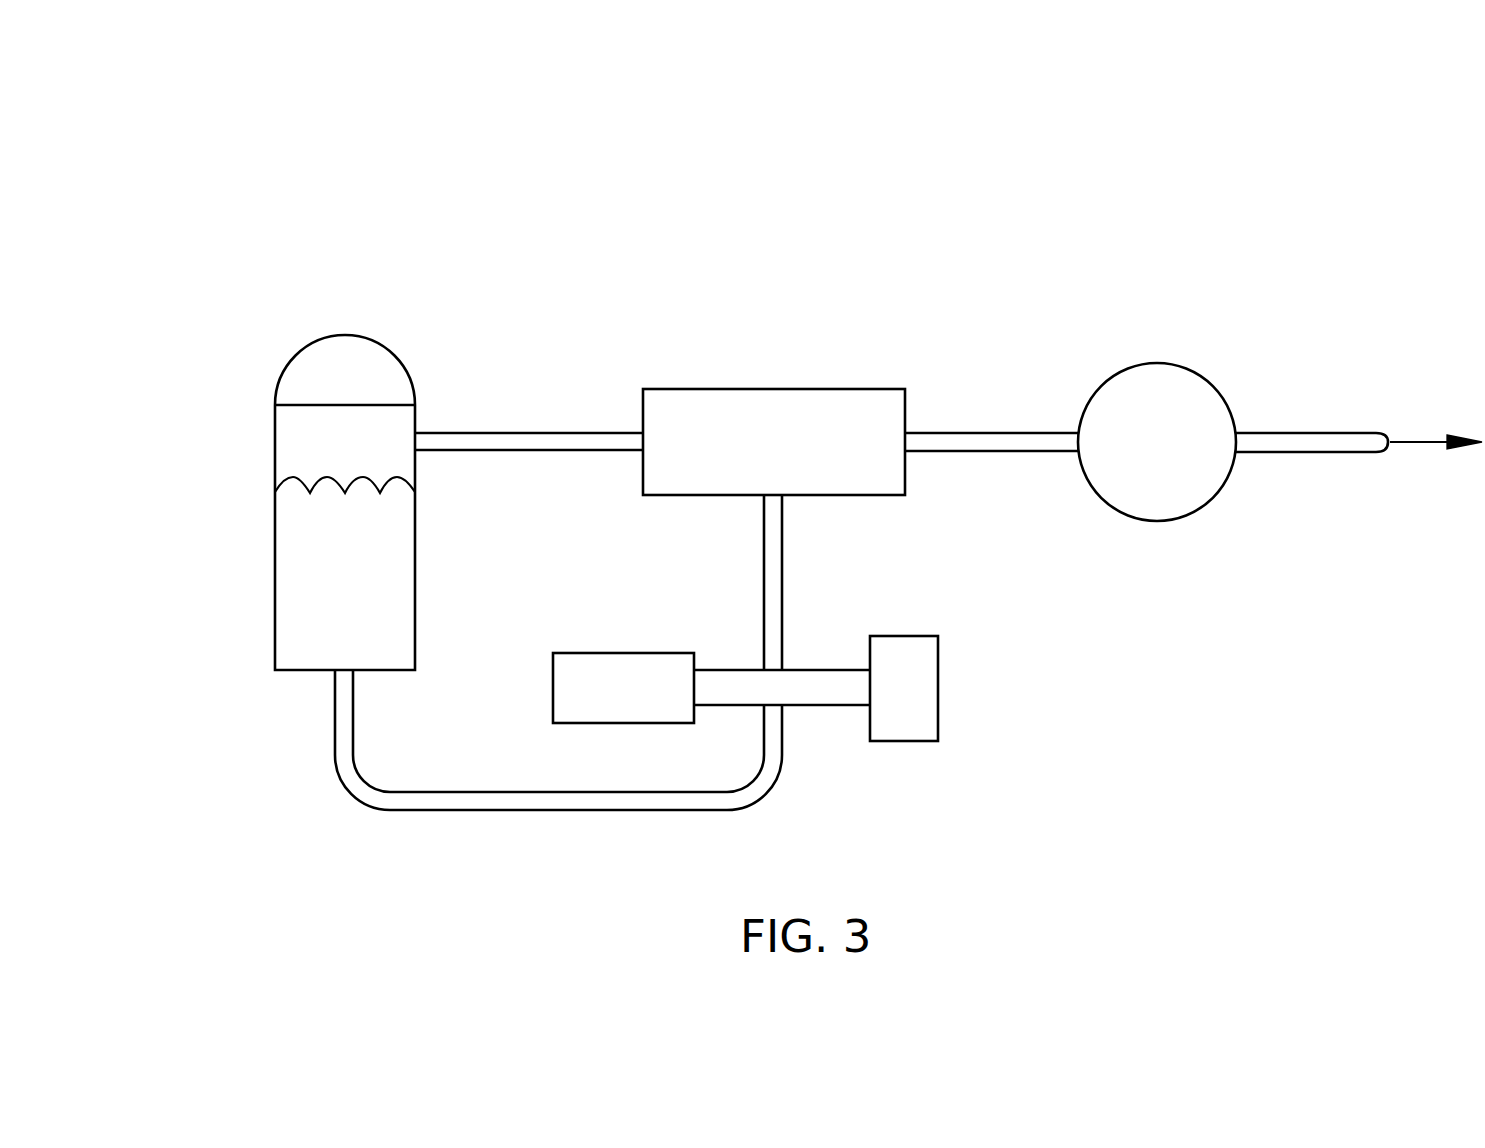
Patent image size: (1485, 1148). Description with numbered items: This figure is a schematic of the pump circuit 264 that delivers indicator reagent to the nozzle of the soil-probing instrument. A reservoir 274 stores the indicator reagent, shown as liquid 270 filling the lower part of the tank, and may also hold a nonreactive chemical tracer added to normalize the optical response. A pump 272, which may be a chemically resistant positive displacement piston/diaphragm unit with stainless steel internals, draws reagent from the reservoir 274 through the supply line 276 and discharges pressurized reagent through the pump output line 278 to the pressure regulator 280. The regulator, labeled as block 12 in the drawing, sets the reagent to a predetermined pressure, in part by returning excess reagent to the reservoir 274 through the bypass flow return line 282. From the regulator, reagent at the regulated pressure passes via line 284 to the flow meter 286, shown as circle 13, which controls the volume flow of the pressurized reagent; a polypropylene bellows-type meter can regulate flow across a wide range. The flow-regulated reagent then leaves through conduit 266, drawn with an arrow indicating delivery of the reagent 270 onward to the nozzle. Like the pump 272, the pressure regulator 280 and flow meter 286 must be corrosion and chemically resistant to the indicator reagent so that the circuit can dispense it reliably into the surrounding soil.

The pump circuit 264 is at (860, 196).
The pressure regulator 12 is at (790, 373).
The flow meter 13 is at (1114, 387).
The fluid 270 is at (373, 565).
The pump 272 is at (625, 653).
The reservoir 274 is at (275, 447).
The supply line 276 is at (550, 812).
The pump output line 278 is at (782, 575).
The pressure regulator 280 is at (770, 389).
The bypass flow return line 282 is at (522, 433).
The line 284 is at (993, 453).
The flow meter 286 is at (1162, 363).
The conduit 266 is at (1305, 433).